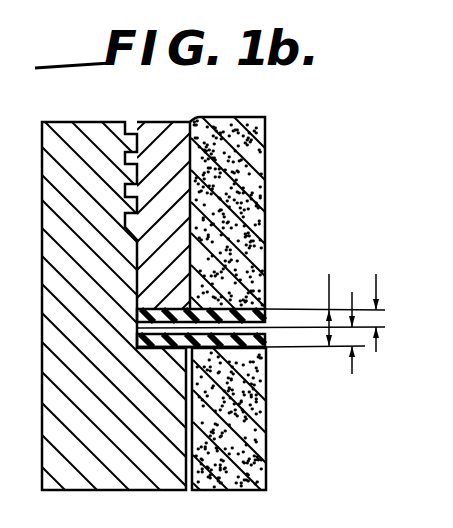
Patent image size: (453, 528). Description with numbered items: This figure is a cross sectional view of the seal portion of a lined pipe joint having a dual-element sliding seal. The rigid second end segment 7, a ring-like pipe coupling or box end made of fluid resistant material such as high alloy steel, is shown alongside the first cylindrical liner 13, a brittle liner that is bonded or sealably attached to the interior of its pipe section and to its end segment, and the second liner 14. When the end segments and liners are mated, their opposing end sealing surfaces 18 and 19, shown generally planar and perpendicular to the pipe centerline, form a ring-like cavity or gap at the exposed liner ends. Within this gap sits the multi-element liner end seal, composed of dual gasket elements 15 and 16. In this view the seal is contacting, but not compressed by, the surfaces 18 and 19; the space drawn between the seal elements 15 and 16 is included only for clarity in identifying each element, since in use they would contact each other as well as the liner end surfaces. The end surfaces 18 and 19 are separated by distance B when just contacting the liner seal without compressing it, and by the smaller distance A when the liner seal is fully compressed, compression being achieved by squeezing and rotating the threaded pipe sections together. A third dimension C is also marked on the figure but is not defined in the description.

The second end segment 7 is at (61, 122).
The first cylindrical liner 13 is at (266, 205).
The second liner 14 is at (267, 466).
The first gasket element 15 is at (270, 309).
The second gasket element 16 is at (266, 339).
The first end sealing surface 18 is at (243, 307).
The second end sealing surface 19 is at (244, 348).
The fully compressed separation distance A is at (352, 321).
The contacting separation distance B is at (328, 298).
The dimension C is at (382, 300).